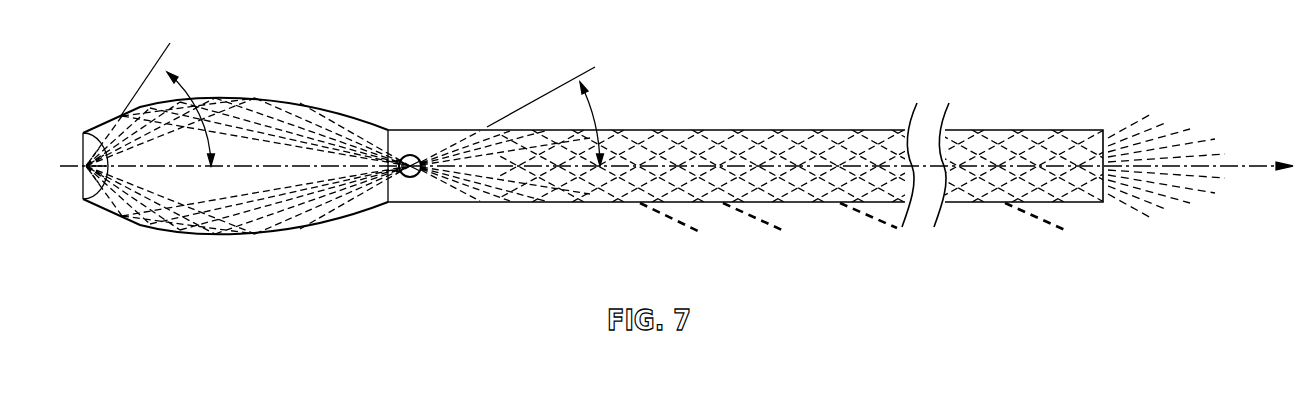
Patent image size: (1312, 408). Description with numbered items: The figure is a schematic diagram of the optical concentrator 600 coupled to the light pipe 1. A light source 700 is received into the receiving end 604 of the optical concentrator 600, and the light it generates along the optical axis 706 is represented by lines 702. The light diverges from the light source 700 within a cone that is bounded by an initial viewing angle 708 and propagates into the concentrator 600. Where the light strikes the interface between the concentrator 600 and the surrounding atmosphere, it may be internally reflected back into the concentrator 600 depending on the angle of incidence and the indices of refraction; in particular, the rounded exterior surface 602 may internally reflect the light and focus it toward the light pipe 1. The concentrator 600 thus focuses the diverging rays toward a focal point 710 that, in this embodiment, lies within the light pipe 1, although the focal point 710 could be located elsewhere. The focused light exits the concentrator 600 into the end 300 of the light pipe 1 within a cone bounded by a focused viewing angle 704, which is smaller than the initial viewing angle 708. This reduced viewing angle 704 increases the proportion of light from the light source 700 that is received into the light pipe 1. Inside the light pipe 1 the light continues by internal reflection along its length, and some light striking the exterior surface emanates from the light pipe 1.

The light pipe 1 is at (742, 130).
The end of the light pipe 300 is at (382, 202).
The optical concentrator 600 is at (302, 100).
The rounded exterior surface 602 is at (273, 232).
The receiving end 604 is at (82, 133).
The light source 700 is at (82, 199).
The lines 702 is at (245, 103).
The focused viewing angle 704 is at (593, 117).
The optical axis 706 is at (1237, 168).
The initial viewing angle 708 is at (185, 94).
The focal point 710 is at (407, 154).